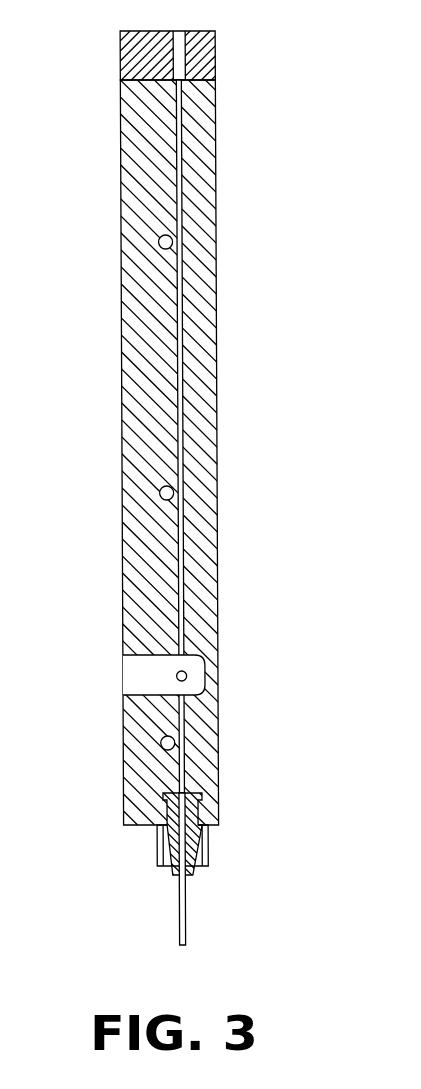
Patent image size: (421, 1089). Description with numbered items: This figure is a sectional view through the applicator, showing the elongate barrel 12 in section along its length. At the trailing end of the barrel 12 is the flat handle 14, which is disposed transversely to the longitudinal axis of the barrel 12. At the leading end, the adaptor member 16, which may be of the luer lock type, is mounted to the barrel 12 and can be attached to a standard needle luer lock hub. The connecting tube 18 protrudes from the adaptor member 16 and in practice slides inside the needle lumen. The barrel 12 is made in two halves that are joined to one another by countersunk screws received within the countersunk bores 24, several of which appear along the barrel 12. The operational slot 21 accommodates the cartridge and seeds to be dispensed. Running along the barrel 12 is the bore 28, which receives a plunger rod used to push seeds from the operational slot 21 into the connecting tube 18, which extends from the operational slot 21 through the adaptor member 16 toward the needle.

The elongate barrel 12 is at (216, 267).
The flat handle 14 is at (215, 55).
The adaptor member 16 is at (156, 847).
The connecting tube 18 is at (190, 901).
The operational slot 21 is at (148, 692).
The countersunk bores 24 is at (158, 240).
The bore 28 is at (183, 337).